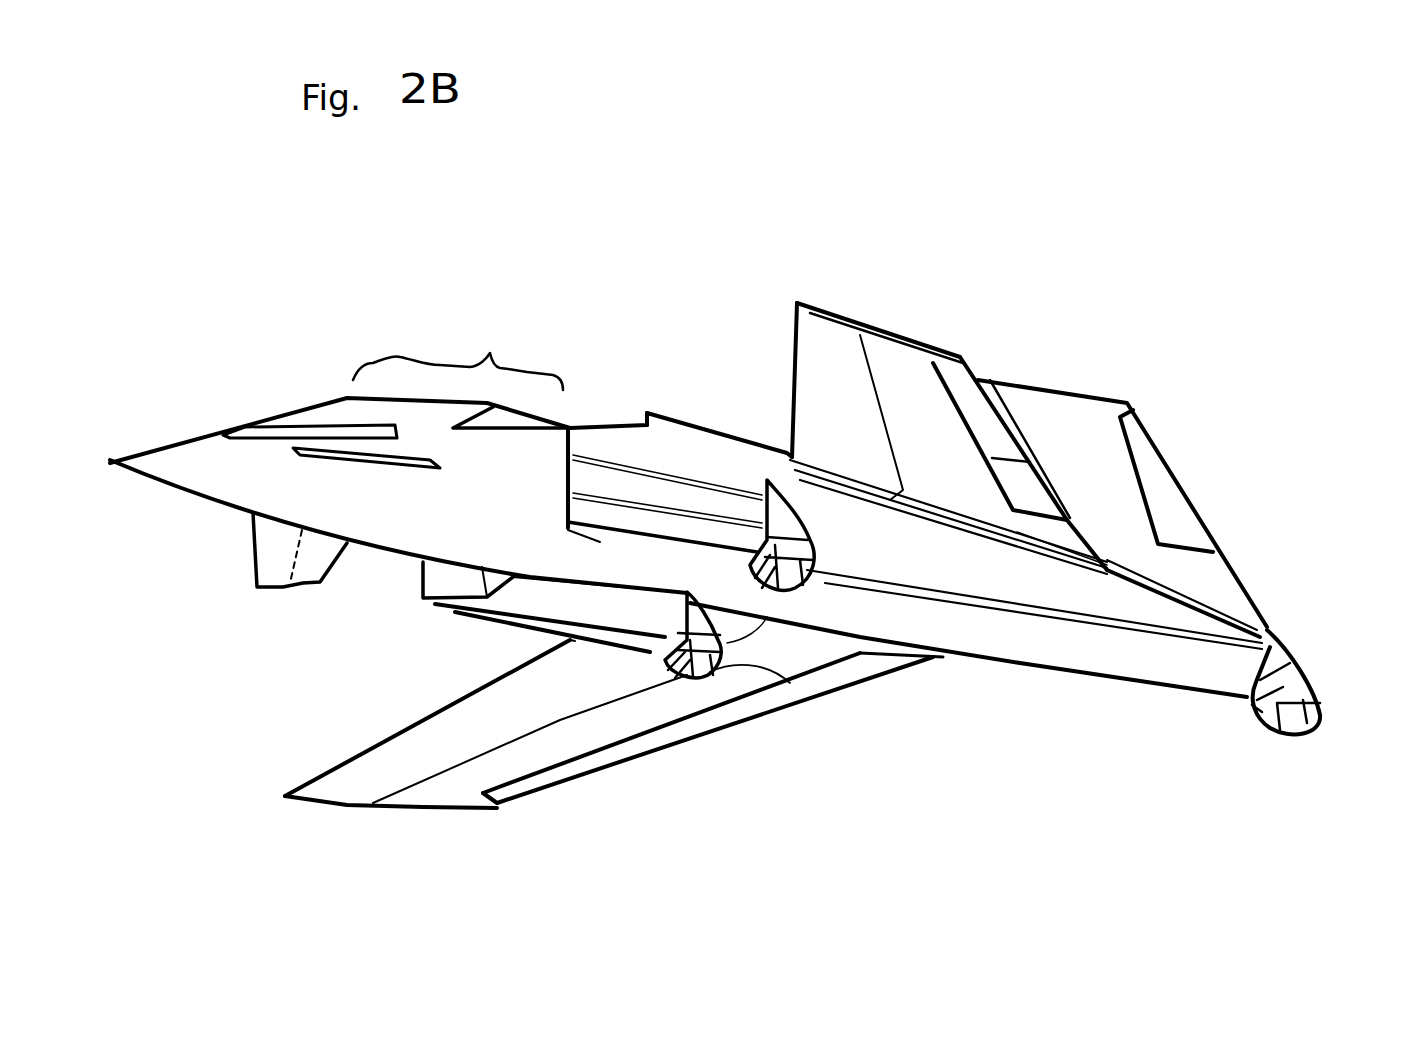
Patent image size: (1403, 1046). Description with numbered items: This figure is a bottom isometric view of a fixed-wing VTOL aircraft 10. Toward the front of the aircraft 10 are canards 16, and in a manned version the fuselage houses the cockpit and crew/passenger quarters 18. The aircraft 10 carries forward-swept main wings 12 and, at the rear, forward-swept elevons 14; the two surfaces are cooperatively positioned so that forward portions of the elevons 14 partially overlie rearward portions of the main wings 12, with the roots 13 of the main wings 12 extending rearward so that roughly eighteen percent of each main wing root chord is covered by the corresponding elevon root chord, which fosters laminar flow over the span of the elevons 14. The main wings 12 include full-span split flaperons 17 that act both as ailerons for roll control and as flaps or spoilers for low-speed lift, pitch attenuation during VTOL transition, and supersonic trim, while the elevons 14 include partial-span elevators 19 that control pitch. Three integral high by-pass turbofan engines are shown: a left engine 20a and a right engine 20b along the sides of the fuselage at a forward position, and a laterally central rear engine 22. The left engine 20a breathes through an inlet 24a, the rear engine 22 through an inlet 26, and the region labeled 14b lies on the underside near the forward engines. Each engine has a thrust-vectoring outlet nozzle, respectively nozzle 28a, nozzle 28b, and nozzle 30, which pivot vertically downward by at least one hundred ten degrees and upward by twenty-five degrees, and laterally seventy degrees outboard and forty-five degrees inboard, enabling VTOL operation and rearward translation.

The fixed-wing VTOL aircraft 10 is at (1040, 180).
The main wings 12 is at (823, 337).
The roots of the main wings 13 is at (1047, 540).
The elevons 14 is at (1070, 410).
The lower intake 14b is at (463, 587).
The canards 16 is at (413, 475).
The split flaperons 17 is at (1080, 505).
The cockpit and crew/passenger quarters 18 is at (458, 349).
The elevators 19 is at (1162, 497).
The left engine 20a is at (668, 568).
The right engine 20b is at (515, 640).
The rear engine 22 is at (1137, 660).
The inlet of the left engine 24a is at (568, 482).
The inlet of the rear engine 26 is at (640, 427).
The thrust-vectoring outlet nozzle of the left engine 28a is at (807, 520).
The thrust-vectoring outlet nozzle of the right engine 28b is at (777, 670).
The thrust-vectoring outlet nozzle of the rear engine 30 is at (1317, 697).